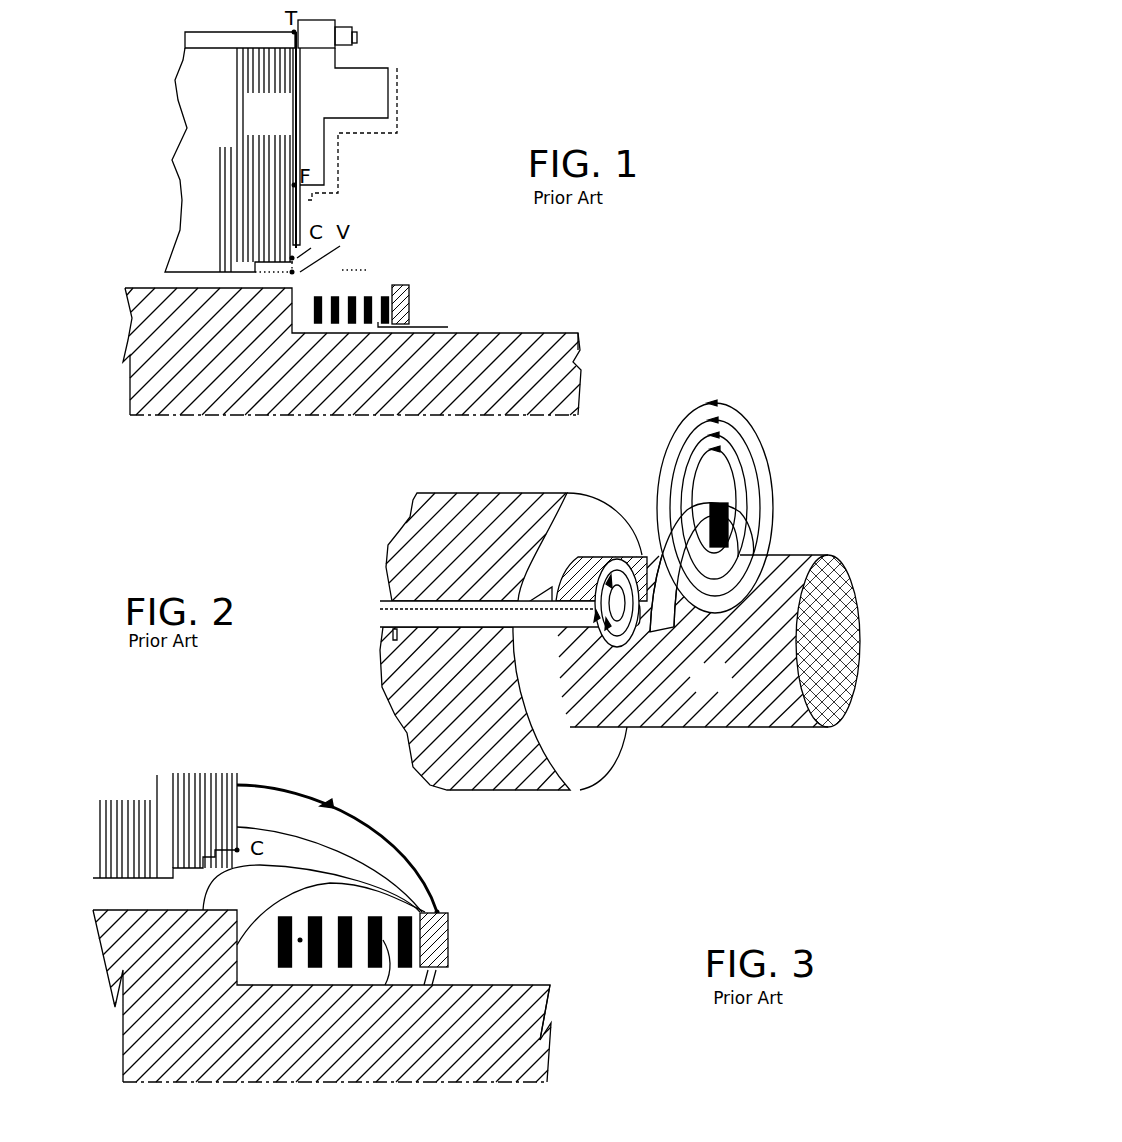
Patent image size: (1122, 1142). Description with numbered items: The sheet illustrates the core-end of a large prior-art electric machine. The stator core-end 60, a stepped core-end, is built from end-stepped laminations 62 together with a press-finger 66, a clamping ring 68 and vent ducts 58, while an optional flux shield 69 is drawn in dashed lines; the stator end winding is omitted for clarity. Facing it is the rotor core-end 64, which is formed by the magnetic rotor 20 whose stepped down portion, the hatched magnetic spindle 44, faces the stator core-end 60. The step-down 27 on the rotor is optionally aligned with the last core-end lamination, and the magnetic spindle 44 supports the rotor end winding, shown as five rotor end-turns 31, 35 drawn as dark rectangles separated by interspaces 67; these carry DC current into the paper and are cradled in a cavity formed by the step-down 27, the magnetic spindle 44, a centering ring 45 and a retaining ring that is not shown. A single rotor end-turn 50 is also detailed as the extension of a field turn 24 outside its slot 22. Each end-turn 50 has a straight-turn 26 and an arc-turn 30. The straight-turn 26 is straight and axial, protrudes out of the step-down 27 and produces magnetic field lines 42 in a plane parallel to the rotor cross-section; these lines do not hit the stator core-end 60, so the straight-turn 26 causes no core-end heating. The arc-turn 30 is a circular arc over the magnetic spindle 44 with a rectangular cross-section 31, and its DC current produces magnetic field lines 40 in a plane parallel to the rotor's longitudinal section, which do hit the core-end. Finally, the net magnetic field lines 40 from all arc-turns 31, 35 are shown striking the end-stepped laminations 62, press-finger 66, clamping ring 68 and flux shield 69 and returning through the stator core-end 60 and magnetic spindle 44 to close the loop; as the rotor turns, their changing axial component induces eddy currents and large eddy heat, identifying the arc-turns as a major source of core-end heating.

In FIG. 1, the magnetic rotor 20 is at (147, 287).
In FIG. 2, the magnetic rotor 20 is at (520, 790).
In FIG. 3, the magnetic rotor 20 is at (123, 1053).
In FIG. 2, the slot 22 is at (388, 637).
In FIG. 2, the field turn 24 is at (405, 614).
In FIG. 2, the straight-turn 26 is at (573, 598).
In FIG. 1, the step-down 27 is at (285, 310).
In FIG. 2, the step-down 27 is at (605, 753).
In FIG. 2, the arc-turn 30 is at (679, 578).
In FIG. 1, the rotor end-turn 31 is at (318, 297).
In FIG. 2, the rotor end-turn 31 is at (727, 523).
In FIG. 3, the rotor end-turn 31 is at (282, 953).
In FIG. 1, the rotor end-turn 35 is at (383, 297).
In FIG. 3, the rotor end-turn 35 is at (404, 953).
In FIG. 2, the magnetic field lines 40 is at (735, 415).
In FIG. 3, the magnetic field lines 40 is at (293, 792).
In FIG. 2, the magnetic field lines 42 is at (590, 580).
In FIG. 1, the magnetic spindle 44 is at (573, 332).
In FIG. 2, the magnetic spindle 44 is at (743, 728).
In FIG. 3, the magnetic spindle 44 is at (523, 985).
In FIG. 1, the centering ring 45 is at (410, 309).
In FIG. 3, the centering ring 45 is at (450, 937).
In FIG. 2, the rotor end-turn 50 is at (650, 643).
In FIG. 1, the vent ducts 58 is at (240, 75).
In FIG. 1, the stator core-end 60 is at (153, 176).
In FIG. 3, the stator core-end 60 is at (140, 783).
In FIG. 1, the end-stepped laminations 62 is at (292, 258).
In FIG. 3, the end-stepped laminations 62 is at (210, 865).
In FIG. 1, the rotor core-end 64 is at (112, 297).
In FIG. 3, the rotor core-end 64 is at (100, 1000).
In FIG. 1, the press-finger 66 is at (295, 108).
In FIG. 1, the interspaces 67 is at (448, 327).
In FIG. 3, the interspaces 67 is at (300, 940).
In FIG. 1, the clamping ring 68 is at (368, 68).
In FIG. 1, the flux shield 69 is at (401, 102).